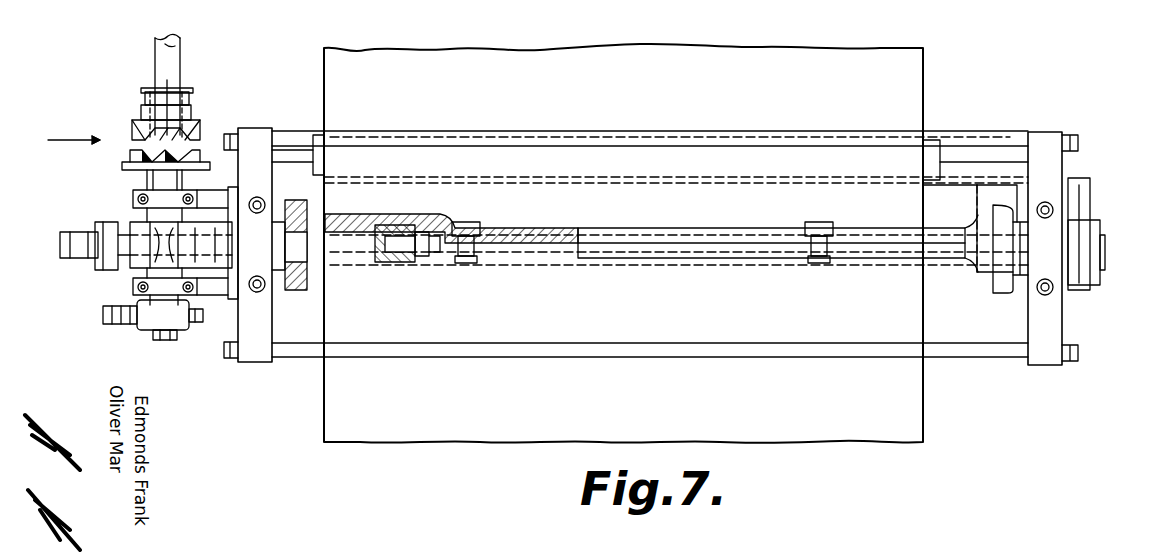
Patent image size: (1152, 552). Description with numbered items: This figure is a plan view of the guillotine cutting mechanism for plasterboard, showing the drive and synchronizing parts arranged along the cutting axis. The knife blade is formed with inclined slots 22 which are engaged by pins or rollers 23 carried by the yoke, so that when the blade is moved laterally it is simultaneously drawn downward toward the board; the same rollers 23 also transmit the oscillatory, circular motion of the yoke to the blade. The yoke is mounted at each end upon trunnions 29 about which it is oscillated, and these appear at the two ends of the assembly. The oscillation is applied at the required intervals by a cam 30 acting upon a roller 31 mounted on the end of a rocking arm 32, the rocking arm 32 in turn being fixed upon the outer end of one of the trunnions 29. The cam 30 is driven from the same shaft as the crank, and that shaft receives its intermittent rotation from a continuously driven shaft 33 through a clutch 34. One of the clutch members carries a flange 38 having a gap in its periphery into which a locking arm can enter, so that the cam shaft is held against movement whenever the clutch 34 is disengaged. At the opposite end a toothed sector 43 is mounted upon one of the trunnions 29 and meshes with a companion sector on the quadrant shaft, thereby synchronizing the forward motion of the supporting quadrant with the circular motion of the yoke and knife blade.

The inclined slots 22 is at (520, 248).
The pins or rollers 23 is at (470, 260).
The trunnions 29 is at (1100, 270).
The cam 30 is at (112, 325).
The roller 31 is at (148, 333).
The rocking arm 32 is at (150, 267).
The continuously driven shaft 33 is at (172, 66).
The clutch 34 is at (137, 126).
The flange 38 is at (125, 165).
The toothed sector 43 is at (1085, 195).